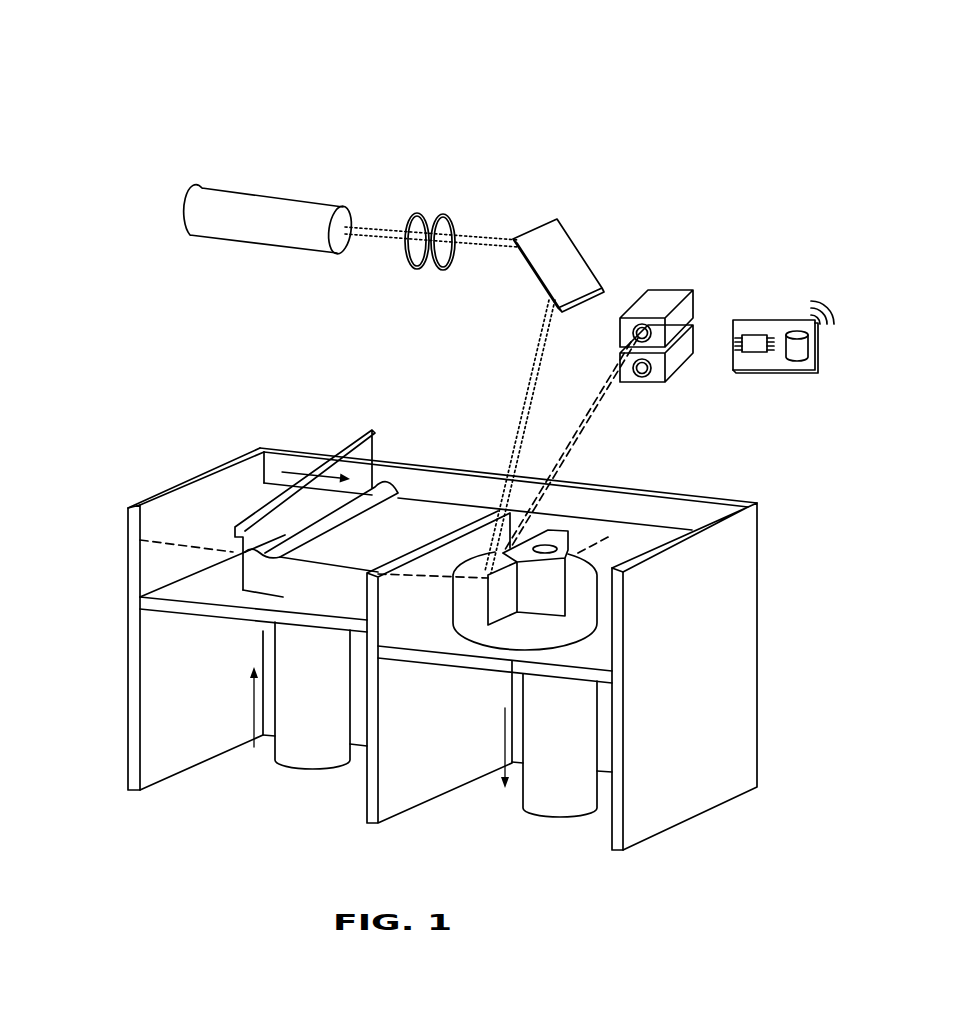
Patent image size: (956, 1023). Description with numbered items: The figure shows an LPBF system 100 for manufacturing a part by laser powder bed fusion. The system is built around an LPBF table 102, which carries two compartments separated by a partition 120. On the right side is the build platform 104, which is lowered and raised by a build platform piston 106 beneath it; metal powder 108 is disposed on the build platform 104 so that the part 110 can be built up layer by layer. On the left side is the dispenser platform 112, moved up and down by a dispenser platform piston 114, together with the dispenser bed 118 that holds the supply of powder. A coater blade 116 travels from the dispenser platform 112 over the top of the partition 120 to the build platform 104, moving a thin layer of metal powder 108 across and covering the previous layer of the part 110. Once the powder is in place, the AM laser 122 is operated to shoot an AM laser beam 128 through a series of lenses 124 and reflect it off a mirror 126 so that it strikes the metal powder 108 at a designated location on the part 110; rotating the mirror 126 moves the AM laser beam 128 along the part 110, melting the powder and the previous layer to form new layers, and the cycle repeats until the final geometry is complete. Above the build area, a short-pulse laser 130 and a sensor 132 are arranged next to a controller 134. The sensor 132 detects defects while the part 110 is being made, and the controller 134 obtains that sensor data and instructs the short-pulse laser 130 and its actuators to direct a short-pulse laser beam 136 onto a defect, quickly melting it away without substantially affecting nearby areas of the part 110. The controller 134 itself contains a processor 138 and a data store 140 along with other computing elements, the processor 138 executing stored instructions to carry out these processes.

The LPBF system 100 is at (158, 31).
The LPBF table 102 is at (146, 417).
The build platform 104 is at (446, 662).
The build platform piston 106 is at (543, 790).
The metal powder 108 is at (407, 530).
The part 110 is at (553, 532).
The dispenser platform 112 is at (185, 608).
The dispenser platform piston 114 is at (305, 738).
The coater blade 116 is at (348, 437).
The dispenser bed 118 is at (192, 537).
The partition 120 is at (367, 810).
The AM laser 122 is at (233, 244).
The lenses 124 is at (461, 209).
The mirror 126 is at (571, 238).
The AM laser beam 128 is at (536, 370).
The short-pulse laser 130 is at (658, 297).
The sensor 132 is at (670, 366).
The controller 134 is at (760, 318).
The short-pulse laser beam 136 is at (610, 382).
The processor 138 is at (757, 353).
The data store 140 is at (796, 332).